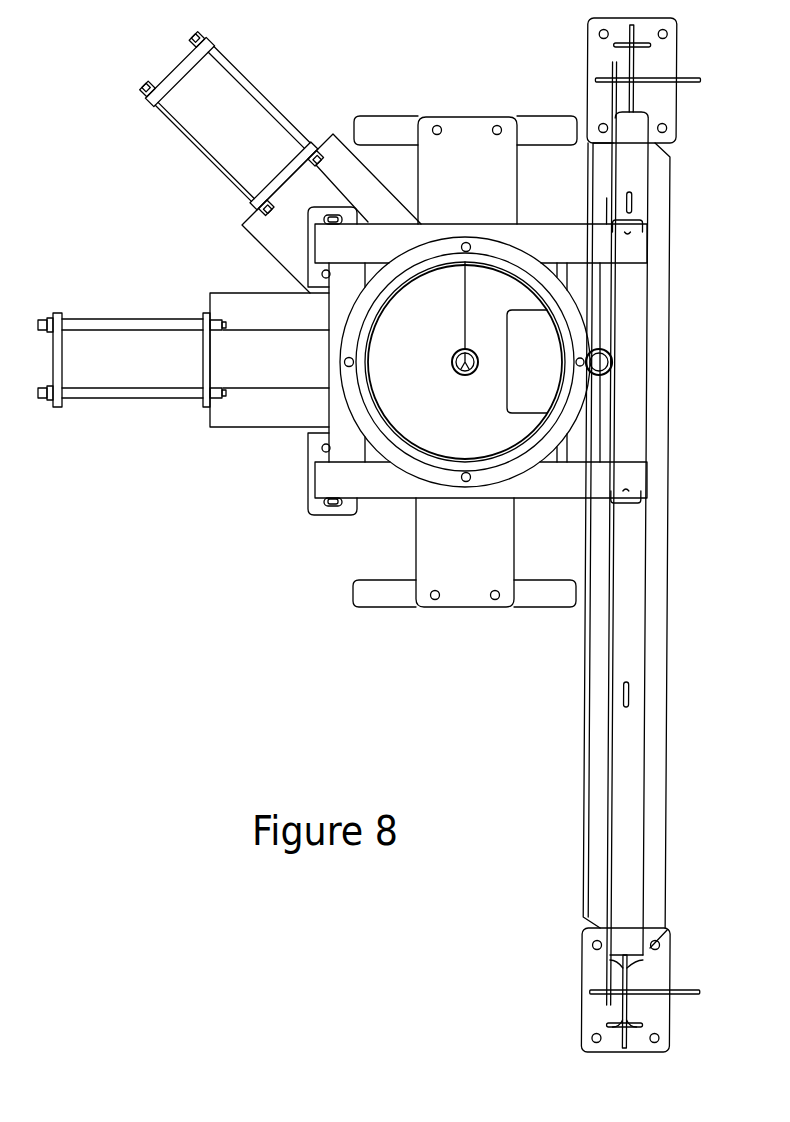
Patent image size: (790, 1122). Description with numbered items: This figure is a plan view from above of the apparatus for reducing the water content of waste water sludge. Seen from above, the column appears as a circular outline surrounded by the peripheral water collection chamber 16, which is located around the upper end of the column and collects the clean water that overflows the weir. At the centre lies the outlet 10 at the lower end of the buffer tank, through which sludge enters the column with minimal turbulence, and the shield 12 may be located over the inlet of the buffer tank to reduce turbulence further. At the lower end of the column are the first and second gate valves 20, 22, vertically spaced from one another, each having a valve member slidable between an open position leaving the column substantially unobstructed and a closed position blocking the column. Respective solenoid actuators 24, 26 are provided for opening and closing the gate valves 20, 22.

The outlet 10 is at (460, 352).
The shield 12 is at (550, 377).
The water collection chamber 16 is at (437, 422).
The first gate valve 20 is at (337, 147).
The second gate valve 22 is at (268, 413).
The solenoid actuator 24 is at (213, 122).
The solenoid actuator 26 is at (120, 380).